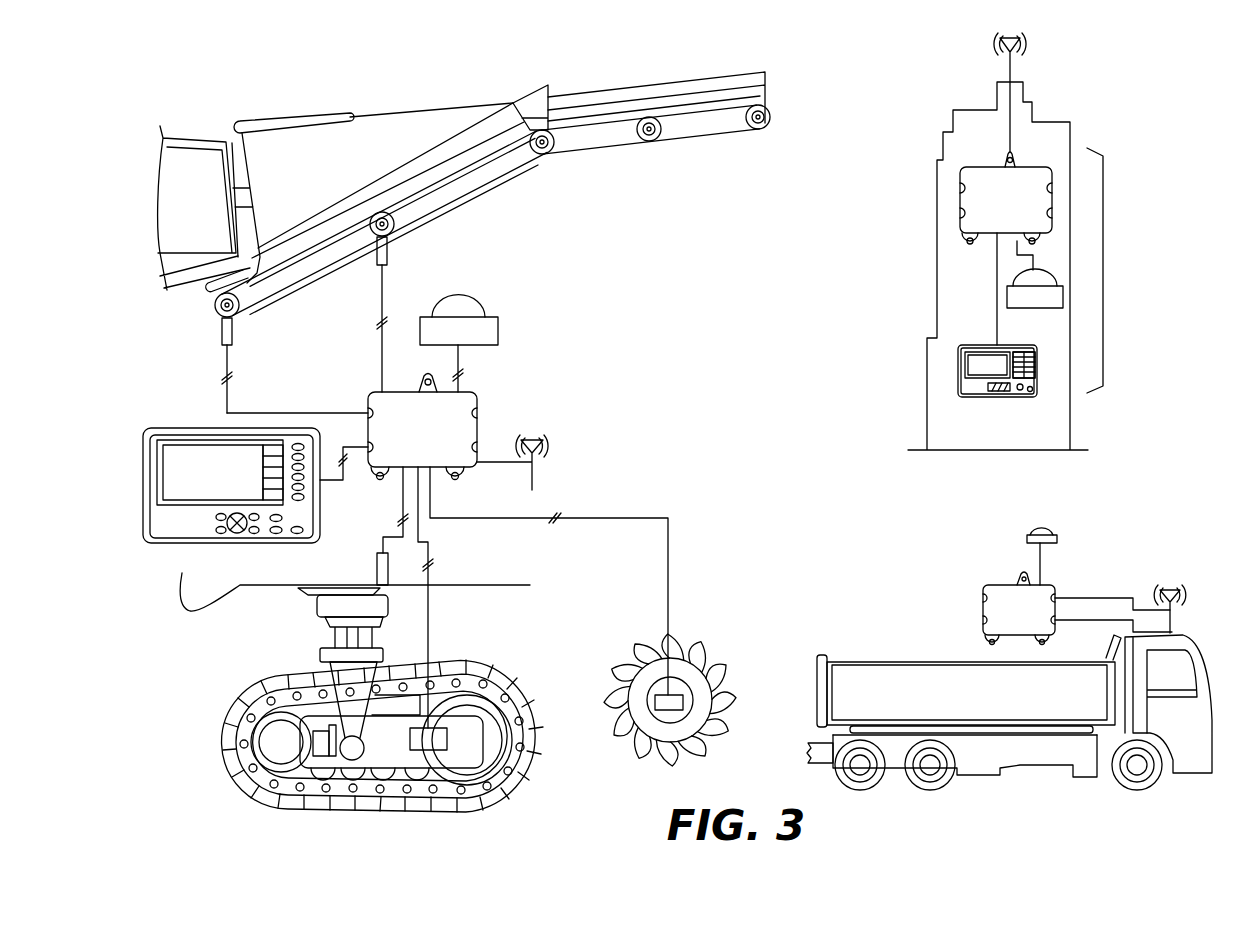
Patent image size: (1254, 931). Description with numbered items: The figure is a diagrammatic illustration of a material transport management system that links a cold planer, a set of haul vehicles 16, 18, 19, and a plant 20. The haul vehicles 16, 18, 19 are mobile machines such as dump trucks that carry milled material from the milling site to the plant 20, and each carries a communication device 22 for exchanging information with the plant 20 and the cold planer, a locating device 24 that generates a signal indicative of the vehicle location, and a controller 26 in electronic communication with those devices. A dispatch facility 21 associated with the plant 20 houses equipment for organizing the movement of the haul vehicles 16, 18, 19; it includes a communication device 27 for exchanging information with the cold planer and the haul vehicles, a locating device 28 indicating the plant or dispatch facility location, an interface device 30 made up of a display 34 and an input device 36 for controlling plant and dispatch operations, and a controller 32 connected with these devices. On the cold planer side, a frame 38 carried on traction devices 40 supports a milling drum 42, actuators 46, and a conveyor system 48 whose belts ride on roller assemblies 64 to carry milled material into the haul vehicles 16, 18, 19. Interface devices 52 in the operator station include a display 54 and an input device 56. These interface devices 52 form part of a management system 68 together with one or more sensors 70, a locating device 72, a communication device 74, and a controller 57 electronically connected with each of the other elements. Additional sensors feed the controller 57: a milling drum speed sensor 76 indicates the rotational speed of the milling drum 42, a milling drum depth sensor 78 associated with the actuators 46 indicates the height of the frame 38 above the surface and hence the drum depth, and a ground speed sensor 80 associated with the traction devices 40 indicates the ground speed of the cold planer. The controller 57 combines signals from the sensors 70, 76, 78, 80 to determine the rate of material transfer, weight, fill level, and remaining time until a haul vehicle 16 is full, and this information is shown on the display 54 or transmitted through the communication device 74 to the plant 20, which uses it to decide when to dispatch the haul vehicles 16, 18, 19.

The haul vehicle 16 is at (1015, 652).
The haul vehicle 18 is at (1015, 652).
The haul vehicle 19 is at (1015, 652).
The plant 20 is at (1030, 241).
The dispatch facility 21 is at (1103, 264).
The communication device 22 is at (1173, 625).
The locating device 24 is at (1058, 539).
The controller 26 is at (1011, 619).
The communication device 27 is at (1022, 41).
The locating device 28 is at (1030, 309).
The interface device 30 is at (989, 391).
The controller 32 is at (996, 208).
The display 34 is at (981, 373).
The input device 36 is at (1047, 384).
The frame 38 is at (193, 153).
The traction devices 40 is at (355, 740).
The milling drum 42 is at (684, 698).
The actuators 46 is at (344, 696).
The conveyor system 48 is at (459, 222).
The interface devices 52 is at (224, 510).
The display 54 is at (205, 481).
The input device 56 is at (348, 522).
The controller 57 is at (414, 436).
The roller assemblies 64 is at (215, 309).
The management system 68 is at (699, 272).
The sensors 70 is at (221, 337).
The locating device 72 is at (450, 341).
The communication device 74 is at (536, 480).
The milling drum speed sensor 76 is at (640, 738).
The milling drum depth sensor 78 is at (390, 575).
The ground speed sensor 80 is at (436, 757).